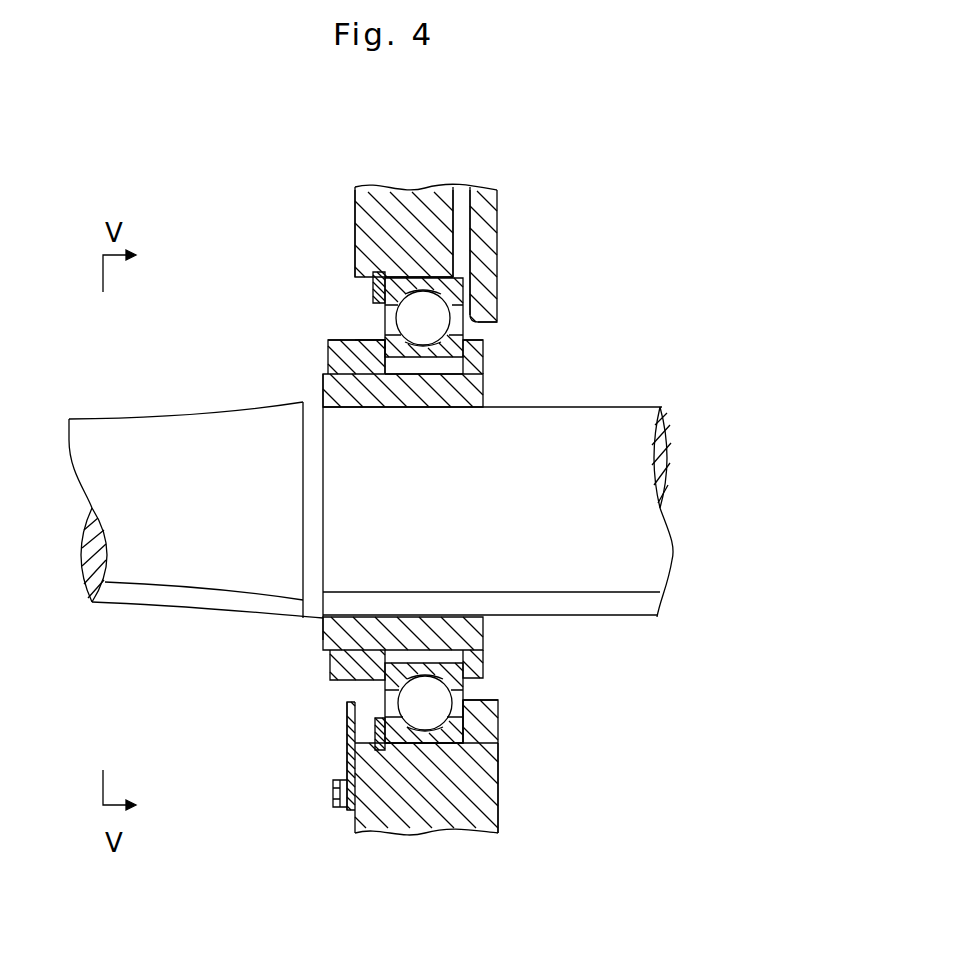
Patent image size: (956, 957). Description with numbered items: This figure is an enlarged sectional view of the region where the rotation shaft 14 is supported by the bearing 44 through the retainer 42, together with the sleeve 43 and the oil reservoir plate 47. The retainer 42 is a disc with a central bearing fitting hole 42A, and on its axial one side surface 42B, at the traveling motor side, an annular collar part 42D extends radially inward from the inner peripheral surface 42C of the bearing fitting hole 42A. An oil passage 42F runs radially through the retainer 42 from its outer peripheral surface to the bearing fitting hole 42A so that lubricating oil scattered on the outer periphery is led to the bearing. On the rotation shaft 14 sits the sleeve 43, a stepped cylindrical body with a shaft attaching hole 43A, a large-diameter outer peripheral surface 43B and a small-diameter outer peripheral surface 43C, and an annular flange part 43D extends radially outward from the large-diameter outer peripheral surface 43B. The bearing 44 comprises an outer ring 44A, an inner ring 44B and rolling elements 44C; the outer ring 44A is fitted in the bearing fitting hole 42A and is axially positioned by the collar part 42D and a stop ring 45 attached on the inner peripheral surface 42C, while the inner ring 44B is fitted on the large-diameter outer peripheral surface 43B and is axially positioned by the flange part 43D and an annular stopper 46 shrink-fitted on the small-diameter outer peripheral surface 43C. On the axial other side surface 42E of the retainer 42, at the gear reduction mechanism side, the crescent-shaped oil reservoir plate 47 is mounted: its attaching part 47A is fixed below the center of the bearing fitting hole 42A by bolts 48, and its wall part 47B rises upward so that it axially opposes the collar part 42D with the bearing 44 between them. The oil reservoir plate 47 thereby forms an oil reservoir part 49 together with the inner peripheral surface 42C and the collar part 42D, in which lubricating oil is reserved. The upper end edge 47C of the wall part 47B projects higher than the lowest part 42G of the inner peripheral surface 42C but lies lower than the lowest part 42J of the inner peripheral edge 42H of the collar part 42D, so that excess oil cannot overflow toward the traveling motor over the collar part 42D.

The rotation shaft 14 is at (175, 485).
The retainer 42 is at (498, 210).
The bearing fitting hole 42A is at (470, 730).
The axial one side surface 42B is at (498, 800).
The inner peripheral surface 42C is at (398, 280).
The collar part 42D is at (480, 728).
The axial other side surface 42E is at (355, 217).
The oil passage 42F is at (463, 252).
The lowest part 42G is at (420, 734).
The inner peripheral edge 42H is at (497, 330).
The lowest part 42J is at (477, 700).
The sleeve 43 is at (484, 382).
The shaft attaching hole 43A is at (347, 410).
The large-diameter outer peripheral surface 43B is at (436, 364).
The small-diameter outer peripheral surface 43C is at (358, 366).
The flange part 43D is at (472, 352).
The bearing 44 is at (385, 312).
The outer ring 44A is at (438, 735).
The inner ring 44B is at (465, 665).
The rolling elements 44C is at (430, 705).
The stop ring 45 is at (373, 290).
The stopper 46 is at (355, 346).
The oil reservoir plate 47 is at (346, 750).
The attaching part 47A is at (352, 767).
The wall part 47B is at (352, 727).
The upper end edge 47C is at (372, 722).
The bolts 48 is at (333, 797).
The oil reservoir part 49 is at (337, 660).